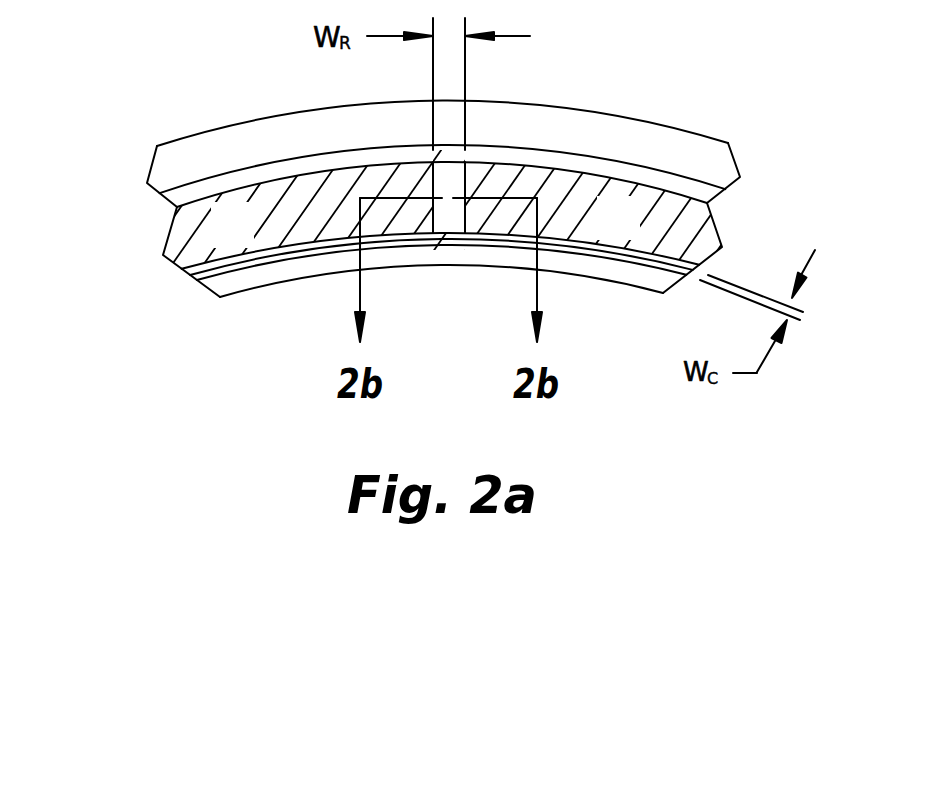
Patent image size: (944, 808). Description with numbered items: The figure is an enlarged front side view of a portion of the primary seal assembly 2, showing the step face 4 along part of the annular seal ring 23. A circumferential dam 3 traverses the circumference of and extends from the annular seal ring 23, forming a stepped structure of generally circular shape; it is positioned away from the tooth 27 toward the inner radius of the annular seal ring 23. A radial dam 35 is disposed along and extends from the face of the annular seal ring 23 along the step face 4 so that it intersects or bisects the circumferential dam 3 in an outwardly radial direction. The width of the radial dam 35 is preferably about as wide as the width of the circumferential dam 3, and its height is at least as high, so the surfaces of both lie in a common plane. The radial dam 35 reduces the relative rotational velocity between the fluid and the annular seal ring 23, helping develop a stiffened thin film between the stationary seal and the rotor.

The primary seal assembly 2 is at (150, 163).
The tooth 27 is at (738, 163).
The step face 4 is at (240, 239).
The annular seal ring 23 is at (162, 256).
The circumferential dam 3 is at (220, 272).
The radial dam 35 is at (442, 177).